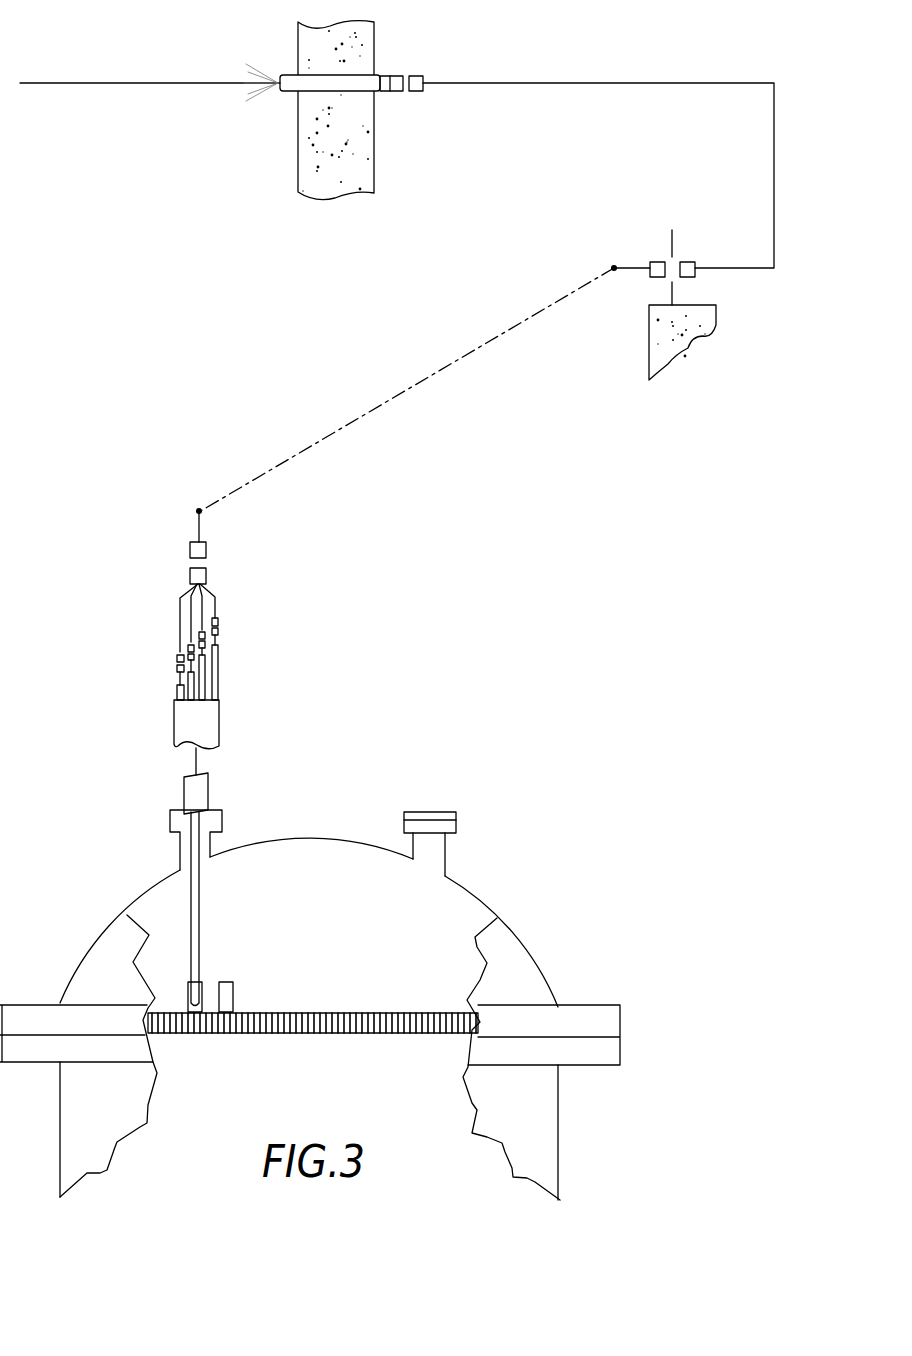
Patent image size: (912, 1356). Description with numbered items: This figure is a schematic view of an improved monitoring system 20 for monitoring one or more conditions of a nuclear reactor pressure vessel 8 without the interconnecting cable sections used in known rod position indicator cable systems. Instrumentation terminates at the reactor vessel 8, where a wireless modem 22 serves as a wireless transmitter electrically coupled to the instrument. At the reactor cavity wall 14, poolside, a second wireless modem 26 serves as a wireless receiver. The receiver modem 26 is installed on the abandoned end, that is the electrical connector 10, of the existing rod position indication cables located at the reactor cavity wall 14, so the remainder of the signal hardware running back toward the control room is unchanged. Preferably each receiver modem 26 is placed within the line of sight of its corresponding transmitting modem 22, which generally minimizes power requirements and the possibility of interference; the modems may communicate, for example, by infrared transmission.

The reactor vessel 8 is at (578, 1122).
The multi pin connector disconnect point 10 is at (688, 262).
The reactor cavity wall 14 is at (682, 352).
The monitoring system 20 is at (462, 582).
The wireless transmitter modem 22 is at (208, 552).
The wireless receiver modem 26 is at (653, 262).